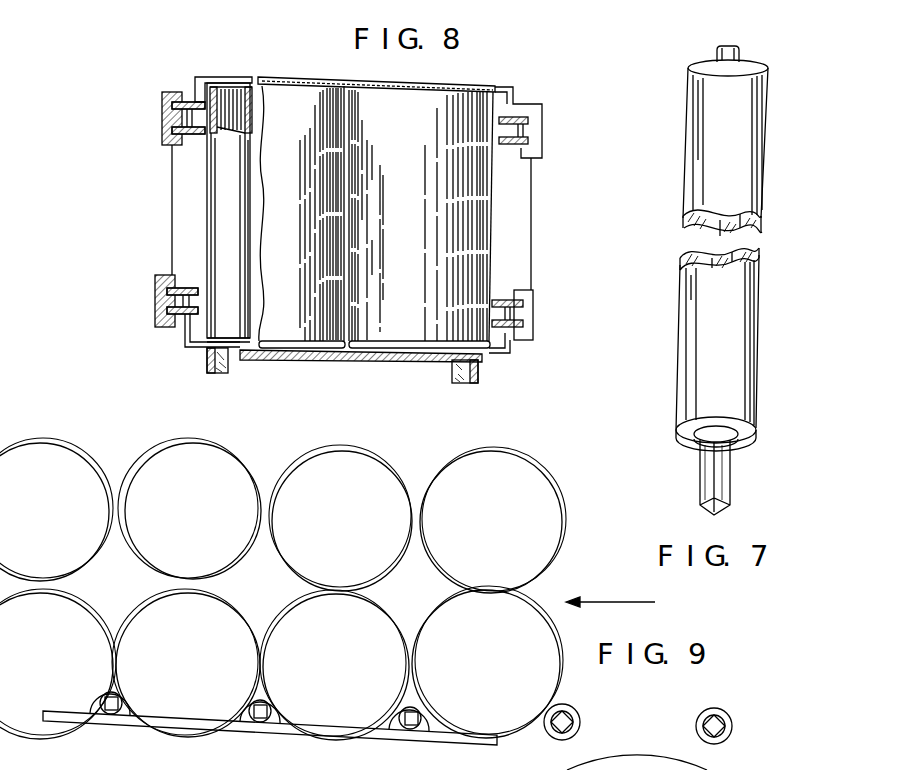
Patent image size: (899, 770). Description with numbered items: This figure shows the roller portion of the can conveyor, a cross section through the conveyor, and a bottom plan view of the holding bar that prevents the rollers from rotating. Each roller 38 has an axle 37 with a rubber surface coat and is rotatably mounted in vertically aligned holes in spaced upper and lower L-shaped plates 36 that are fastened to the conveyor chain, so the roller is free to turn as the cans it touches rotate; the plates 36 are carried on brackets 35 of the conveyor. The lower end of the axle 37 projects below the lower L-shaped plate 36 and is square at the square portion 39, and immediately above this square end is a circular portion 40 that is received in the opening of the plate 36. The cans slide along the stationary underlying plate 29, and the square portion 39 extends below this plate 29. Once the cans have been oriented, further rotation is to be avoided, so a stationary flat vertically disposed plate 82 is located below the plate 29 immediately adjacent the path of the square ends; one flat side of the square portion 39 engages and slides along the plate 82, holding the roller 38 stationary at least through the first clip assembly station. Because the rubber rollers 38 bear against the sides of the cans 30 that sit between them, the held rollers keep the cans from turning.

In FIG. 8, the underlying plate 29 is at (372, 362).
In FIG. 9, the tubular members 30 is at (137, 608).
In FIG. 8, the bracket 35 is at (172, 148).
In FIG. 8, the L-shaped plates 36 is at (197, 98).
In FIG. 8, the axle 37 is at (230, 84).
In FIG. 7, the axle 37 is at (731, 46).
In FIG. 8, the roller 38 is at (255, 102).
In FIG. 7, the roller 38 is at (742, 118).
In FIG. 8, the square portion 39 is at (232, 360).
In FIG. 7, the square portion 39 is at (730, 484).
In FIG. 9, the square portion 39 is at (250, 702).
In FIG. 7, the circular portion 40 is at (743, 447).
In FIG. 8, the stationary flat plate 82 is at (207, 362).
In FIG. 9, the stationary flat plate 82 is at (468, 735).